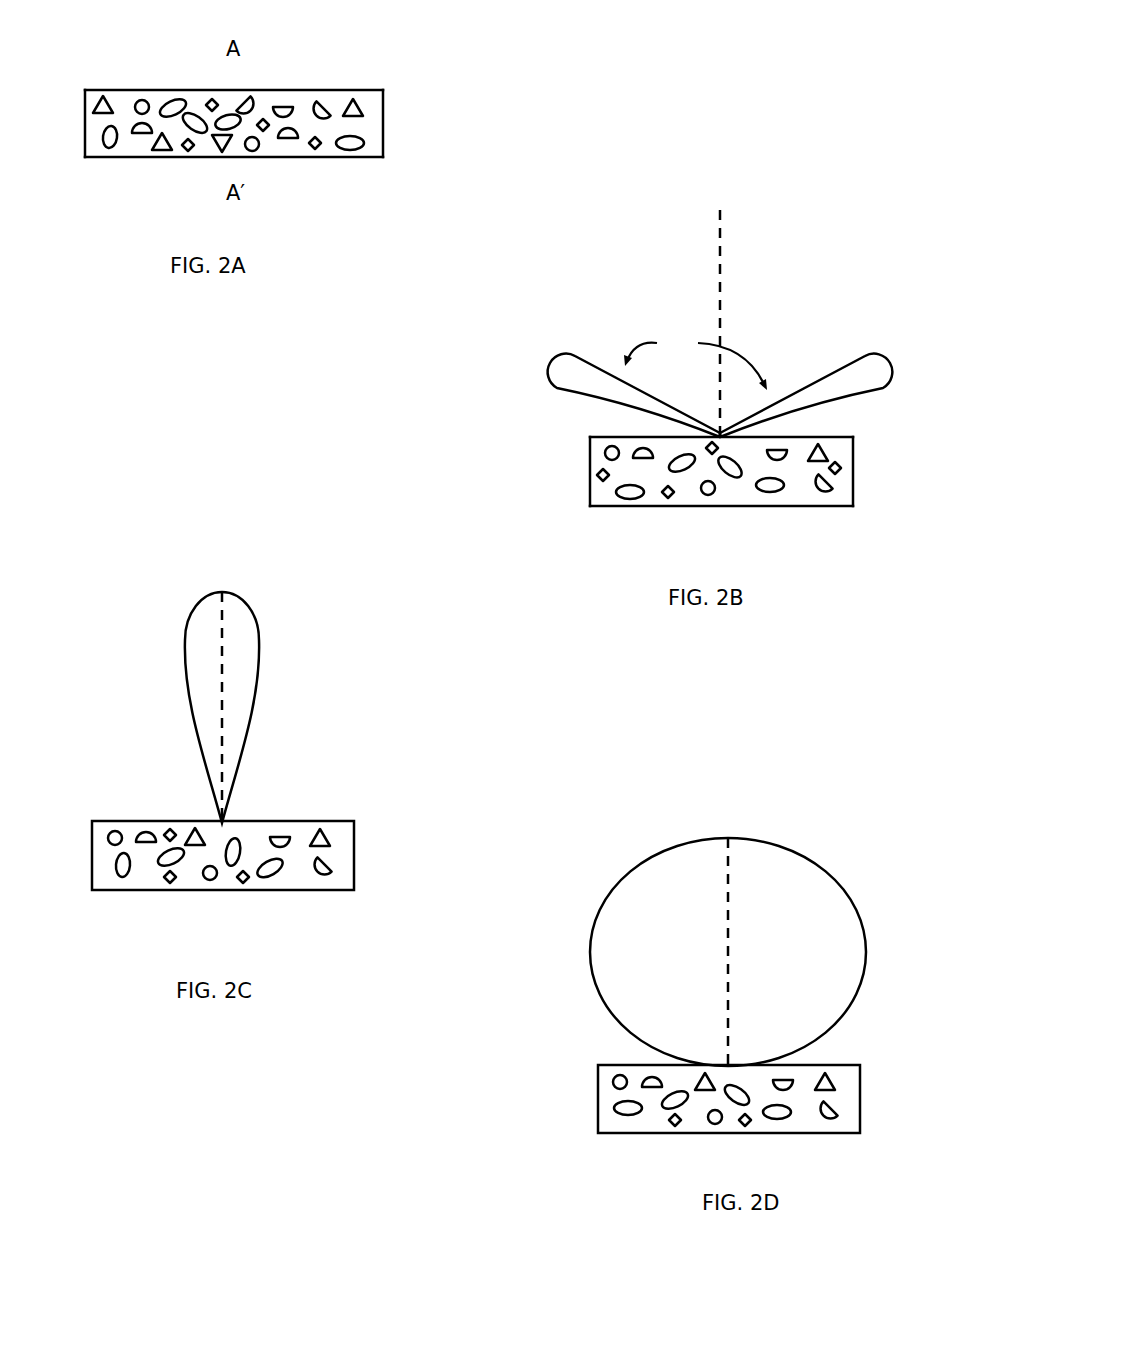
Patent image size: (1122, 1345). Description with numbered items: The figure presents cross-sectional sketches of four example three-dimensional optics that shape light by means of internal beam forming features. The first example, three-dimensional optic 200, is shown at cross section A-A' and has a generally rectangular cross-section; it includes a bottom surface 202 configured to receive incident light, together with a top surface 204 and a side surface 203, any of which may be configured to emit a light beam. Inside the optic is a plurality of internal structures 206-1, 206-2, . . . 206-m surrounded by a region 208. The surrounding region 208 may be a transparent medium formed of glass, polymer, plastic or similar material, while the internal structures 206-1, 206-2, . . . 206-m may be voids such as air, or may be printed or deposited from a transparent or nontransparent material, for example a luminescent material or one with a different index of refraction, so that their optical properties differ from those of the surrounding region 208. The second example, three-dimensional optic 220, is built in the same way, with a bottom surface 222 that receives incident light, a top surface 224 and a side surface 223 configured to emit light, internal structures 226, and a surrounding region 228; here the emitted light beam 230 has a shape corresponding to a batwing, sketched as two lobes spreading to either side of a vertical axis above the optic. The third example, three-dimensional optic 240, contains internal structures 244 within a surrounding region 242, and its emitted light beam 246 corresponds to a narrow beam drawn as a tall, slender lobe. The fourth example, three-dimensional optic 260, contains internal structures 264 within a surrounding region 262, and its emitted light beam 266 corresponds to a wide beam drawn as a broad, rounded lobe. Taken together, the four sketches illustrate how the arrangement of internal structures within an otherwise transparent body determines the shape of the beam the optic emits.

In FIG. 2A, the 3-D optic 200 is at (347, 54).
In FIG. 2A, the bottom surface 202 is at (146, 158).
In FIG. 2A, the side surface 203 is at (83, 111).
In FIG. 2A, the top surface 204 is at (215, 89).
In FIG. 2A, the internal structure 206-1 is at (103, 101).
In FIG. 2A, the internal structure 206-2 is at (248, 101).
In FIG. 2A, the internal structure 206-m is at (253, 151).
In FIG. 2A, the surrounding region 208 is at (377, 134).
In FIG. 2B, the 3-D optic 220 is at (846, 520).
In FIG. 2B, the bottom surface 222 is at (671, 508).
In FIG. 2B, the side surface 223 is at (587, 485).
In FIG. 2B, the top surface 224 is at (620, 434).
In FIG. 2B, the internal structures 226 is at (606, 457).
In FIG. 2B, the surrounding region 228 is at (847, 482).
In FIG. 2B, the light beam 230 is at (695, 361).
In FIG. 2C, the 3-D optic 240 is at (117, 781).
In FIG. 2C, the surrounding region 242 is at (342, 863).
In FIG. 2C, the internal structures 244 is at (109, 841).
In FIG. 2C, the emitted light beam 246 is at (267, 716).
In FIG. 2D, the 3-D optic 260 is at (615, 1152).
In FIG. 2D, the surrounding region 262 is at (848, 1101).
In FIG. 2D, the internal structures 264 is at (656, 1082).
In FIG. 2D, the emitted light beam 266 is at (880, 918).